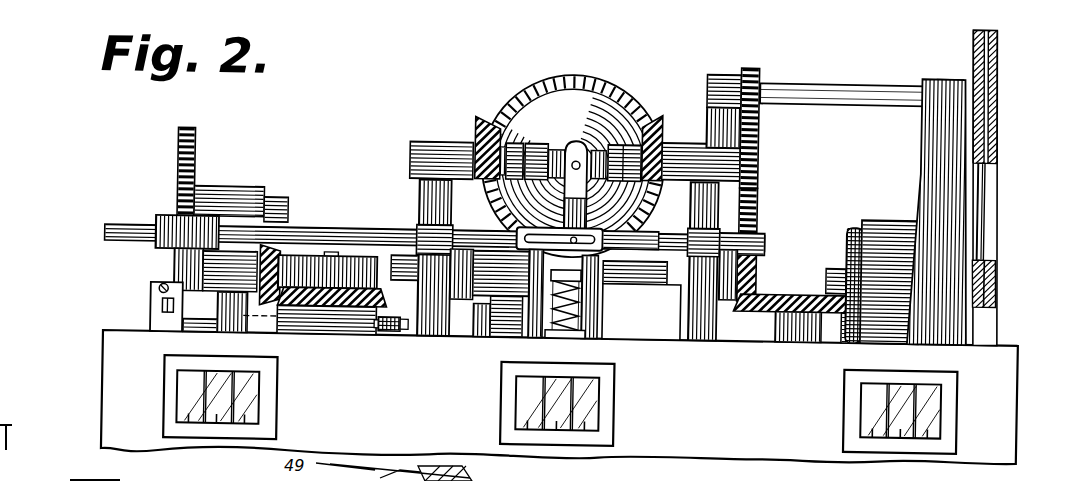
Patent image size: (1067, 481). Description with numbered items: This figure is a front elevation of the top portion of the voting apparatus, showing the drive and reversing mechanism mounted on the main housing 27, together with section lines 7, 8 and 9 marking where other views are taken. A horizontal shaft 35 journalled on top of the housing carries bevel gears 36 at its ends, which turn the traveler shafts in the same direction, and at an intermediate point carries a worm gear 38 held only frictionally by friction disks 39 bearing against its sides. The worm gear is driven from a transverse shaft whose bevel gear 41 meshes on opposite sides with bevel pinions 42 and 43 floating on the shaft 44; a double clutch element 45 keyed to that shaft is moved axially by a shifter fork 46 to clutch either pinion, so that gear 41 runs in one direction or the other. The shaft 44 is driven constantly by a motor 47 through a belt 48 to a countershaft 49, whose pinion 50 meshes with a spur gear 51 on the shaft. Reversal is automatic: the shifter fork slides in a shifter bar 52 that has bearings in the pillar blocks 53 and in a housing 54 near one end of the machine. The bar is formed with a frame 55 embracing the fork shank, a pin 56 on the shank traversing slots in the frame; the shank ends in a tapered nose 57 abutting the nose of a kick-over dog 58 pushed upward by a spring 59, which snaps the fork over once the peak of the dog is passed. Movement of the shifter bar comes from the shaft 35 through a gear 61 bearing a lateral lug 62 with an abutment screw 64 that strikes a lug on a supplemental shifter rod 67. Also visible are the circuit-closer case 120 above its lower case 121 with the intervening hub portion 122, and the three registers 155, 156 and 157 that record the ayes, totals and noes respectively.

The section line 7- 7 is at (565, 134).
The section line 8- 8 is at (233, 268).
The section line 9- 9 is at (228, 332).
The housing 27 is at (992, 335).
The horizontal shaft 35 is at (655, 278).
The bevel gears 36 is at (273, 241).
The worm gear 38 is at (546, 265).
The friction disks 39 is at (589, 318).
The bevel gear 41 is at (603, 90).
The bevel pinion 42 is at (652, 119).
The bevel pinion 43 is at (477, 117).
The shaft 44 is at (513, 152).
The double clutch element 45 is at (539, 131).
The shifter fork 46 is at (573, 132).
The motor 47 is at (876, 206).
The belt 48 is at (985, 190).
The countershaft 49 is at (826, 82).
The pinion 50 is at (752, 57).
The spur gear 51 is at (757, 212).
The shifter bar 52 is at (391, 233).
The pillar blocks 53 is at (421, 189).
The housing 54 is at (172, 213).
The frame 55 is at (636, 211).
The pin 56 is at (514, 226).
The tapered nose 57 is at (602, 252).
The kick-over dog 58 is at (581, 266).
The spring 59 is at (578, 326).
The gear 61 is at (191, 132).
The lateral lug 62 is at (165, 281).
The abutment screw 64 is at (157, 285).
The supplemental shifter rod 67 is at (160, 303).
The case 120 is at (338, 258).
The case 121 is at (357, 327).
The hub portion 122 is at (327, 292).
The register 155 is at (277, 403).
The register 156 is at (614, 393).
The register 157 is at (946, 386).